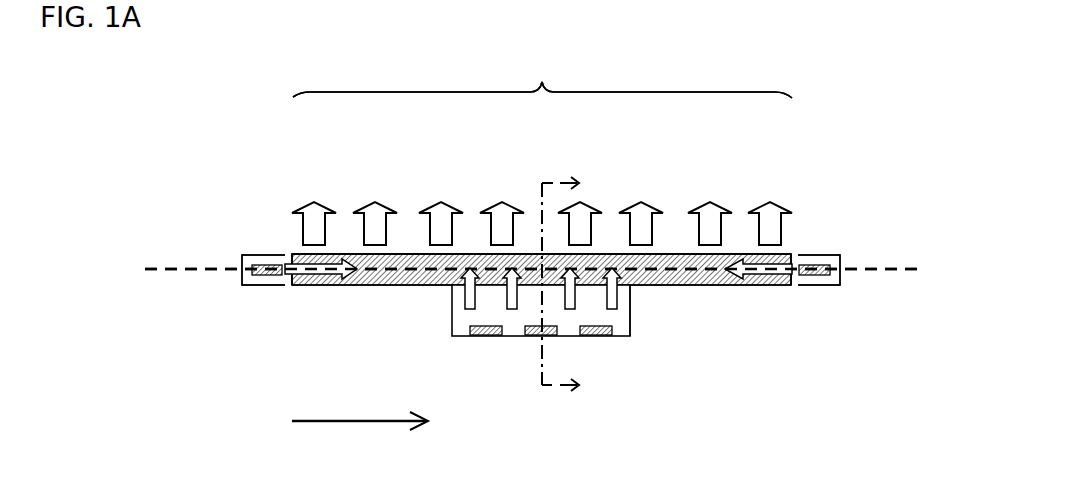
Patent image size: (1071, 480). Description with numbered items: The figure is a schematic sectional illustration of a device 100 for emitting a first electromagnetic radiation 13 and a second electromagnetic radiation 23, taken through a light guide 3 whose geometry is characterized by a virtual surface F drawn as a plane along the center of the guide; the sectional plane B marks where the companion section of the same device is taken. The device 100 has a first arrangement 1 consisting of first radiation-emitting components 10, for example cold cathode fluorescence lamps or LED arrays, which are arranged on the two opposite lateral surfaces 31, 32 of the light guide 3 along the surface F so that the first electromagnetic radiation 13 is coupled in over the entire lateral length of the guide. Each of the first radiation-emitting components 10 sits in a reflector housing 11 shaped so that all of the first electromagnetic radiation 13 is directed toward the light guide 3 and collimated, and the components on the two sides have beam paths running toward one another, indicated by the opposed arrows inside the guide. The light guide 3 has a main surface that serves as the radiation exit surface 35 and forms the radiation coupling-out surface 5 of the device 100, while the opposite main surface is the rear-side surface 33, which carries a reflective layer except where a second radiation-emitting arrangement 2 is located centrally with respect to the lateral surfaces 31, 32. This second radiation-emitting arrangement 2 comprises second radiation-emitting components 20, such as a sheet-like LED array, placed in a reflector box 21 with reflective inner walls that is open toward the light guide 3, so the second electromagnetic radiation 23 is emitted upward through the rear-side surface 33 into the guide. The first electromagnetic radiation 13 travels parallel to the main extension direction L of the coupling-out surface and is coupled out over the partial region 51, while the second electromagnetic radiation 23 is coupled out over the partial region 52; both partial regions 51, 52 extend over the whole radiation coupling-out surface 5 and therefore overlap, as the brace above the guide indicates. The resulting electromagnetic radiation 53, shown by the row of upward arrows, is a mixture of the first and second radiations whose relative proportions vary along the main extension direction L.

The device 100 is at (376, 17).
The first arrangement 1 is at (242, 285).
The second radiation-emitting arrangement 2 is at (510, 335).
The light guide 3 is at (428, 287).
The radiation coupling-out surface 5 is at (676, 254).
The first radiation-emitting components 10 is at (265, 285).
The reflector housings 11 is at (242, 268).
The first electromagnetic radiation 13 is at (323, 273).
The second radiation-emitting components 20 is at (600, 337).
The reflector box 21 is at (631, 312).
The second electromagnetic radiation 23 is at (570, 290).
The lateral surface 31 is at (291, 256).
The lateral surface 32 is at (793, 256).
The rear-side surface 33 is at (375, 287).
The radiation exit surface 35 is at (395, 255).
The first partial region 51 is at (542, 80).
The second partial region 52 is at (542, 90).
The electromagnetic radiation 53 is at (640, 213).
The virtual surface F is at (158, 275).
The sectional plane BB B is at (570, 286).
The main extension direction L is at (353, 424).